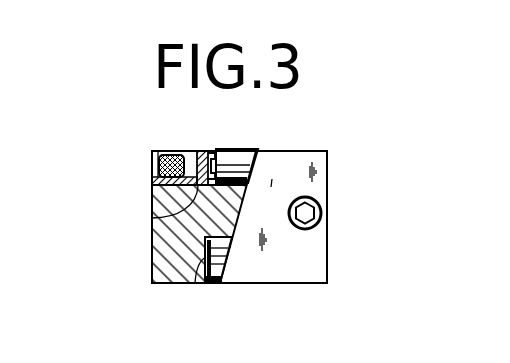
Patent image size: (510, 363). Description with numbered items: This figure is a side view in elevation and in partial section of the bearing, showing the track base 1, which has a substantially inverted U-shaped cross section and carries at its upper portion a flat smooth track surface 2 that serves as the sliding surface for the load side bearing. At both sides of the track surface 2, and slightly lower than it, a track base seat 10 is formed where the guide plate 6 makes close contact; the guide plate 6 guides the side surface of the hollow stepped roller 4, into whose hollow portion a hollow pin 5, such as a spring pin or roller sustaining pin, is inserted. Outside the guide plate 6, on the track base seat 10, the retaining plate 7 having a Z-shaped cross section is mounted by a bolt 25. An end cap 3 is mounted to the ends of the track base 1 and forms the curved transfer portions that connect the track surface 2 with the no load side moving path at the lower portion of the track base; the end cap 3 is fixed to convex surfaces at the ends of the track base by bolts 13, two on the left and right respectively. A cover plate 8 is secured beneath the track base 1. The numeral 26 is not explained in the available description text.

The track base 1 is at (152, 254).
The track surface 2 is at (250, 175).
The end cap 3 is at (332, 186).
The hollow stepped roller 4 is at (248, 163).
The hollow pin 5 is at (213, 160).
The guide plate 6 is at (152, 219).
The retaining plate 7 is at (201, 164).
The cover plate 8 is at (215, 277).
The track base seat 10 is at (152, 191).
The bolt 13 is at (322, 214).
The bolt 25 is at (160, 163).
The lower clamp 26 is at (200, 262).